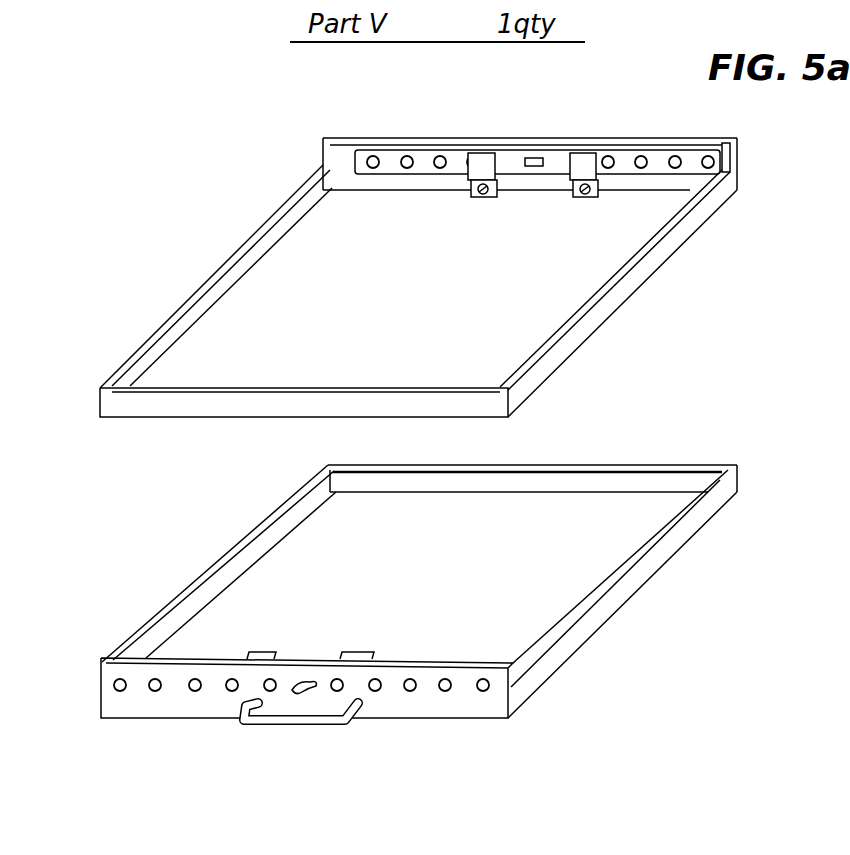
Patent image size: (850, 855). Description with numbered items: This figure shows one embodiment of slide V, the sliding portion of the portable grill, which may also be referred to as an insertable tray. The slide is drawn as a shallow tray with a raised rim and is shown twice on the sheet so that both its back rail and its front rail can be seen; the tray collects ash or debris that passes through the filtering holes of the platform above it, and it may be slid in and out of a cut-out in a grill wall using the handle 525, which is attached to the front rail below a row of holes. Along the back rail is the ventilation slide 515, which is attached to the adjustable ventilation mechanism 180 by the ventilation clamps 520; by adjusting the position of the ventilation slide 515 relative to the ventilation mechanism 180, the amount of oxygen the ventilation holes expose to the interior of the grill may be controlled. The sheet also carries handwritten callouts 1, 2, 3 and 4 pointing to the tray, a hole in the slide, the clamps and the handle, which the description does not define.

The tray assembly 1 is at (419, 608).
The mounting holes 2 is at (390, 158).
The clamps 3 is at (533, 128).
The handle 4 is at (307, 722).
The ventilation slide 515 is at (430, 173).
The ventilation clamps 520 is at (475, 180).
The handle 525 is at (303, 750).
The adjustable ventilation mechanism 180 is at (415, 700).